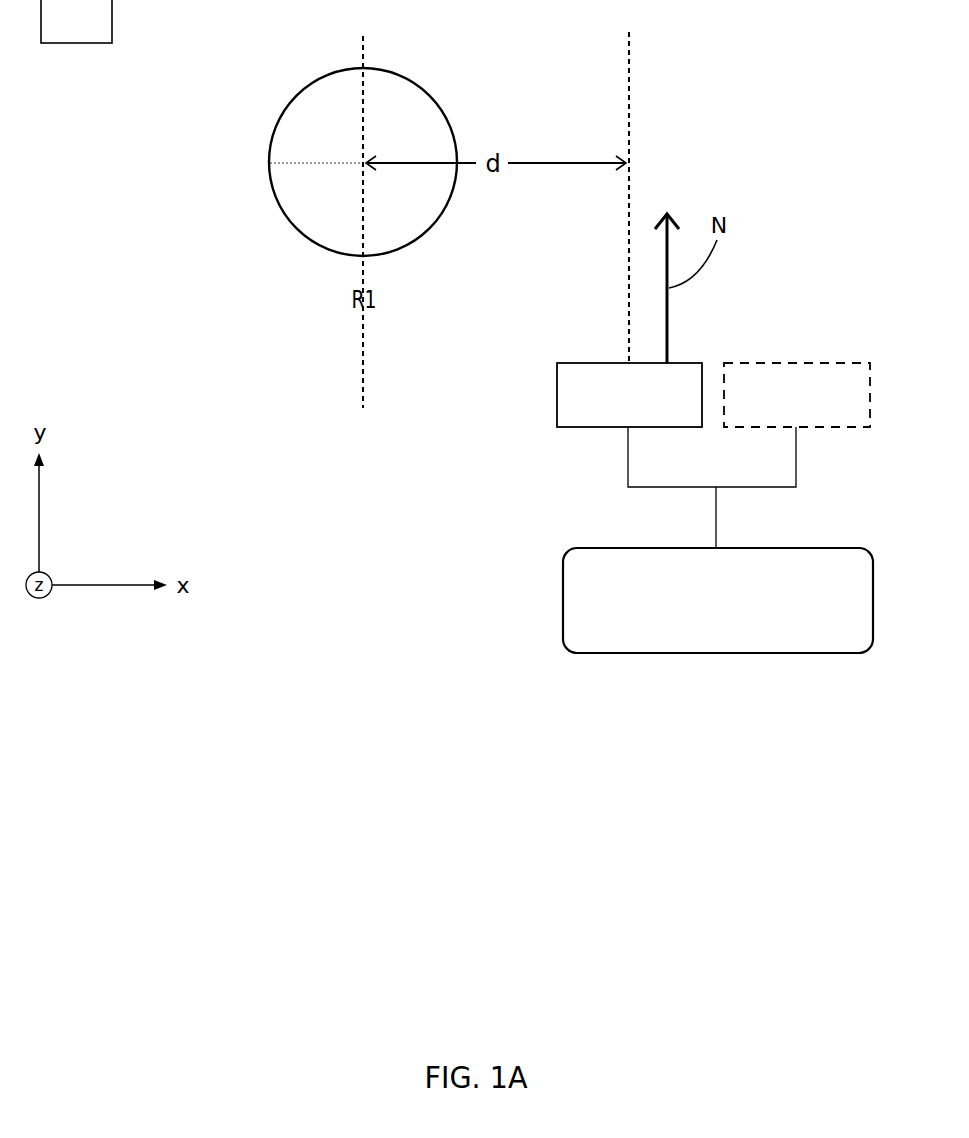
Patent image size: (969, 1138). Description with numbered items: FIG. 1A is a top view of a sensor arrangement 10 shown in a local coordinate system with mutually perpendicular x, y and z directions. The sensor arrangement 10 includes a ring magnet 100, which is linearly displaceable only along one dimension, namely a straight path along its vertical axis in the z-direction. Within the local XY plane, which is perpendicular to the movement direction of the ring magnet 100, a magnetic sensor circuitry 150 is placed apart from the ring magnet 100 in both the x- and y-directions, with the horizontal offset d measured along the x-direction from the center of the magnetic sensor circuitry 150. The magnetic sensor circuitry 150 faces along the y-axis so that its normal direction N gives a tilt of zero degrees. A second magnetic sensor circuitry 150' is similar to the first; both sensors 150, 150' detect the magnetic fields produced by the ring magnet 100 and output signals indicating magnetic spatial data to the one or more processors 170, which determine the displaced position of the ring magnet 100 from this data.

The sensor arrangement 10 is at (76, 21).
The ring magnet 100 is at (285, 108).
The magnetic sensor circuitry 150 is at (629, 395).
The second magnetic sensor circuitry 150' is at (797, 395).
The processors 170 is at (718, 600).